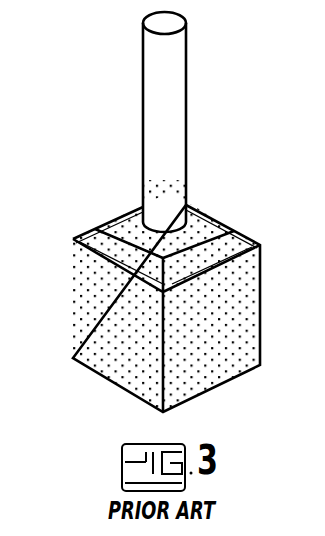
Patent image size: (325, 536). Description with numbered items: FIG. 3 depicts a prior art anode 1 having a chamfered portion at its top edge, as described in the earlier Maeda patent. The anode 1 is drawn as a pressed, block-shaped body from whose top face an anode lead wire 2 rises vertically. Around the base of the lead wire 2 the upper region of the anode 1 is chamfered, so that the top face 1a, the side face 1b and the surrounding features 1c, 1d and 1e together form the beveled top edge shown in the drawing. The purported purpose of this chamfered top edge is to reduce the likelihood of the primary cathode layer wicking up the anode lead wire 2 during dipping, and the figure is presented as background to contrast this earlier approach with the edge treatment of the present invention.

The anode 1 is at (261, 308).
The top face 1a is at (190, 208).
The side face 1b is at (110, 328).
The right bevel face 1c is at (234, 232).
The front edge 1d is at (113, 264).
The left bevel face 1e is at (101, 228).
The shank 2 is at (186, 65).